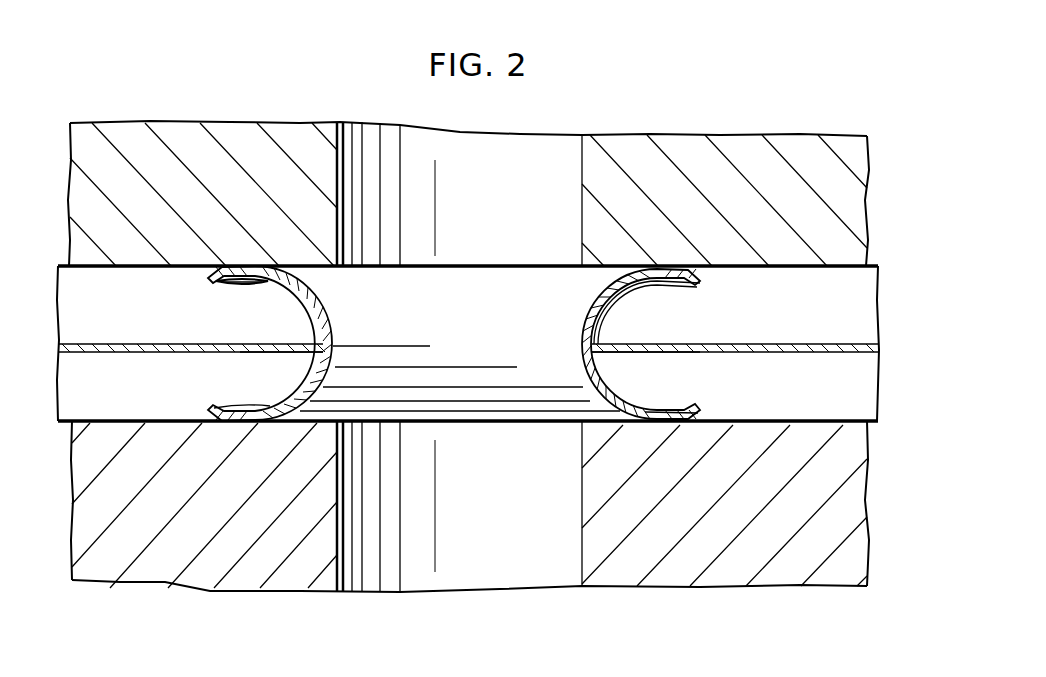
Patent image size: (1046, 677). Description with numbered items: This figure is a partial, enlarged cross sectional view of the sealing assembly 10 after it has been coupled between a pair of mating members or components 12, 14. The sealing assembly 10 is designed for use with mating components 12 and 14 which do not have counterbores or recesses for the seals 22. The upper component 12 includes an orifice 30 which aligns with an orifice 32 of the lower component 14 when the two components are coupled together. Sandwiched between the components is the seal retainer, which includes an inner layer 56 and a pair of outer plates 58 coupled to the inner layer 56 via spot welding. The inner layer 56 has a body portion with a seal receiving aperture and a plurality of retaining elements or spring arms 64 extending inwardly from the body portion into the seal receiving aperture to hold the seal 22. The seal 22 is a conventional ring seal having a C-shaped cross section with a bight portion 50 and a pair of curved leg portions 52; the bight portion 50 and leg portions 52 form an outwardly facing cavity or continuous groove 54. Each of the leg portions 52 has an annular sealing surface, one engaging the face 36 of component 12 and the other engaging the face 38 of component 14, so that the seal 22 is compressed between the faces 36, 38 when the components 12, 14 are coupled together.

The sealing assembly 10 is at (881, 443).
The mating component 12 is at (638, 135).
The mating component 14 is at (737, 588).
The seal 22 is at (522, 266).
The orifice 30 is at (573, 156).
The orifice 32 is at (571, 590).
The face 36 is at (168, 268).
The face 38 is at (150, 422).
The bight portion 50 is at (444, 343).
The curved leg portion 52 is at (238, 284).
The continuous groove 54 is at (320, 313).
The inner layer 56 is at (111, 346).
The outer plate 58 is at (60, 265).
The spring arm 64 is at (260, 353).